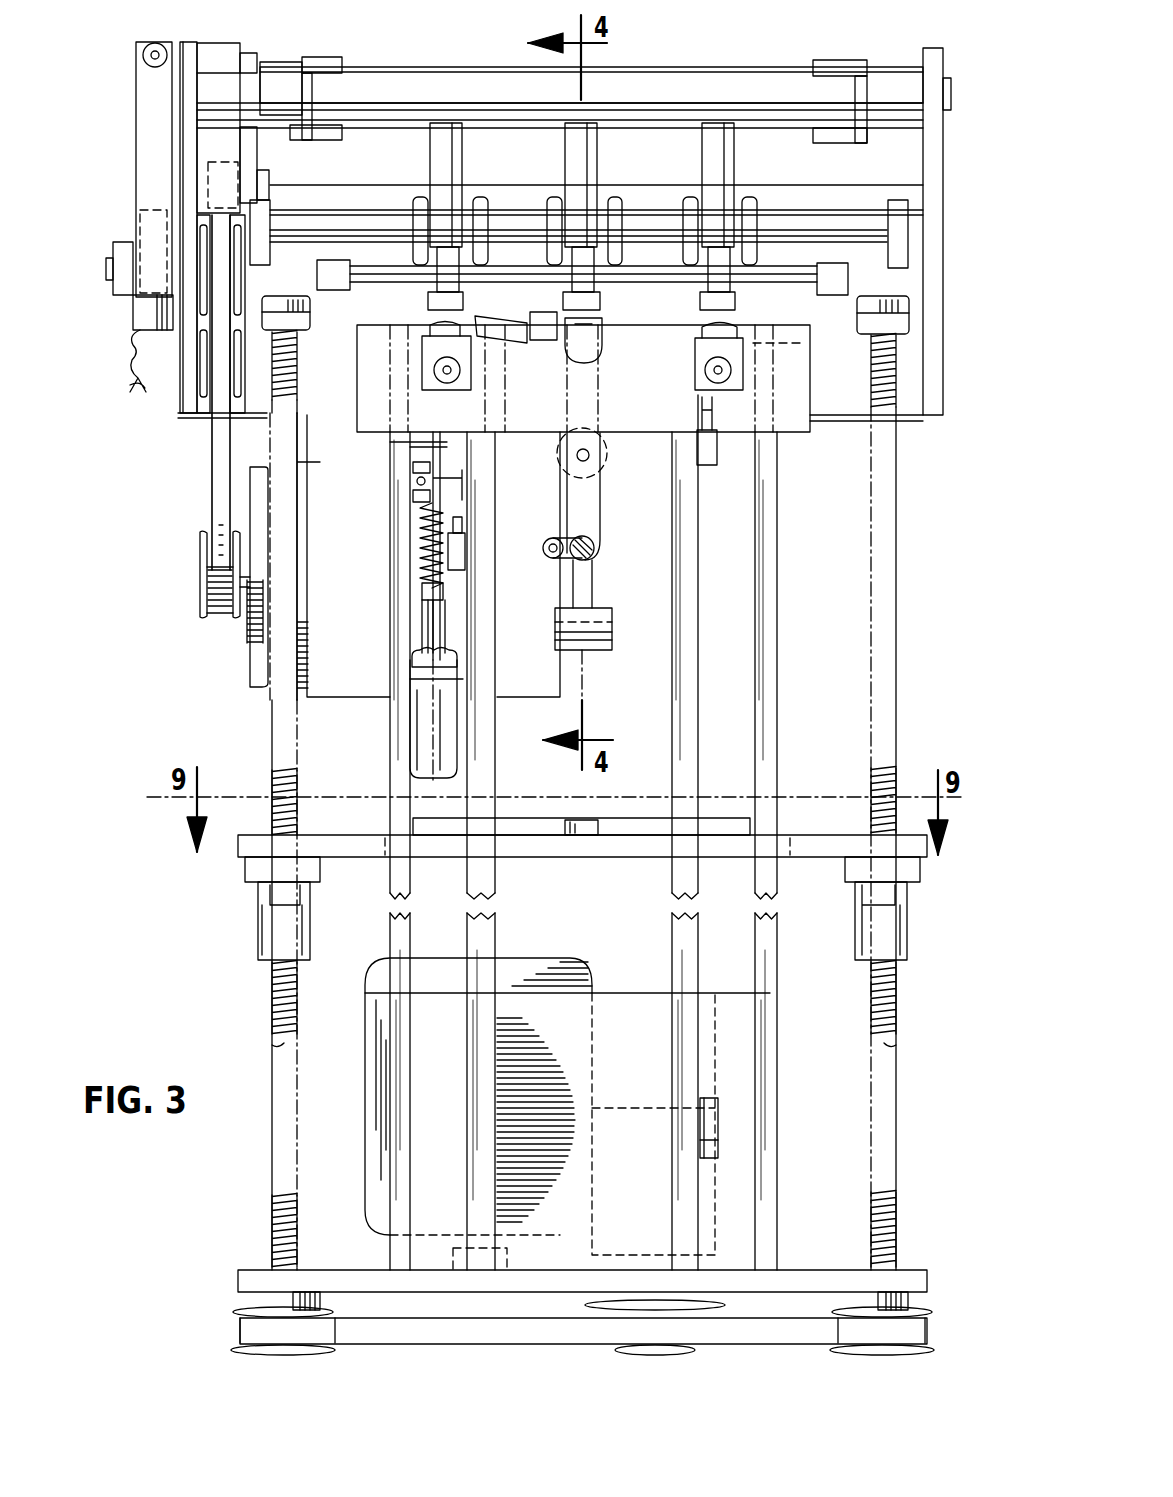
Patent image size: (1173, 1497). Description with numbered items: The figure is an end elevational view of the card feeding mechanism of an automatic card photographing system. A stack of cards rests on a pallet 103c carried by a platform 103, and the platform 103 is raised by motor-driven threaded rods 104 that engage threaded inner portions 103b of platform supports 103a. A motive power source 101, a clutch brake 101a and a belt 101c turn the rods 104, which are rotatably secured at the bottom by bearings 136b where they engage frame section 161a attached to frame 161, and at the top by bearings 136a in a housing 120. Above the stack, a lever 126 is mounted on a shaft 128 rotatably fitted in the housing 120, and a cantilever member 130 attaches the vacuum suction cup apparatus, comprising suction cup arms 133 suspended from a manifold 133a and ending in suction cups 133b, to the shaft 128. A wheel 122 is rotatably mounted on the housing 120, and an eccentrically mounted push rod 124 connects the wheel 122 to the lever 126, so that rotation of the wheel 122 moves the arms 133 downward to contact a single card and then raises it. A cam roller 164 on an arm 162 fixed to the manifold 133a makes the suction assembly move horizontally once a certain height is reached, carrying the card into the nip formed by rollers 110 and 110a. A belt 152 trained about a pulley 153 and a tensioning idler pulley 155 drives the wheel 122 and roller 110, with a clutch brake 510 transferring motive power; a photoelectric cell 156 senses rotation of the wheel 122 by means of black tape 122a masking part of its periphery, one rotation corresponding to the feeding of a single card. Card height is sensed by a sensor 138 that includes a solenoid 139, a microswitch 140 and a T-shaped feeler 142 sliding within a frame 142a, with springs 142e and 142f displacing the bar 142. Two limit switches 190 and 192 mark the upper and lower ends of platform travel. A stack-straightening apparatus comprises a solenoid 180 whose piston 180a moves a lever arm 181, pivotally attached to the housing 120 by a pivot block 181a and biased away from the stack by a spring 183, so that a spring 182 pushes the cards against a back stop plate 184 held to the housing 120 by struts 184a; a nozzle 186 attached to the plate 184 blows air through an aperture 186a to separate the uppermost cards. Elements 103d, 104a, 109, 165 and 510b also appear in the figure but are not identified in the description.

The motive power source 101 is at (380, 1081).
The clutch brake 101a is at (618, 1120).
The belt 101c is at (445, 1330).
The platform 103 is at (355, 851).
The platform supports 103a is at (258, 906).
The threaded inner portions 103b is at (272, 940).
The pallet 103c is at (528, 818).
The plate opening 103d is at (388, 850).
The threaded rods 104 is at (298, 373).
The foot pad 104a is at (262, 1356).
The cam 109 is at (464, 328).
The nip roller 110 is at (488, 205).
The nip roller 110a is at (752, 285).
The housing 120 is at (183, 396).
The wheel 122 is at (150, 215).
The black tape 122a is at (140, 306).
The push rod 124 is at (122, 245).
The lever 126 is at (148, 121).
The shaft 128 is at (648, 80).
The cantilever member 130 is at (325, 60).
The suction cup arm 133 is at (440, 165).
The manifold 133a is at (440, 70).
The suction cups 133b is at (430, 301).
The bearings 136a is at (312, 305).
The bearings 136b is at (292, 1300).
The sensor 138 is at (422, 593).
The solenoid 139 is at (428, 749).
The microswitch 140 is at (468, 558).
The T-shaped feeler 142 is at (460, 479).
The frame 142a is at (437, 452).
The spring 142e is at (420, 486).
The spring 142f is at (425, 541).
The belt 152 is at (214, 472).
The pulley 153 is at (250, 268).
The tensioning idler pulley 155 is at (256, 415).
The photoelectric cell 156 is at (135, 324).
The subframe 161 is at (670, 892).
The frame section 161a is at (345, 1276).
The arm 162 is at (258, 161).
The cam roller 164 is at (210, 175).
The frame 165 is at (392, 713).
The solenoid 180 is at (606, 456).
The piston 180a is at (600, 470).
The lever arm 181 is at (594, 586).
The pivot block 181a is at (600, 652).
The spring 182 is at (598, 523).
The spring 183 is at (548, 561).
The back stop plate 184 is at (790, 426).
The struts 184a is at (380, 341).
The nozzle 186 is at (472, 372).
The aperture 186a is at (596, 362).
The limit switch 190 is at (428, 629).
The limit switch 192 is at (712, 1098).
The clutch brake 510 is at (252, 681).
The idler pulley 510b is at (205, 600).